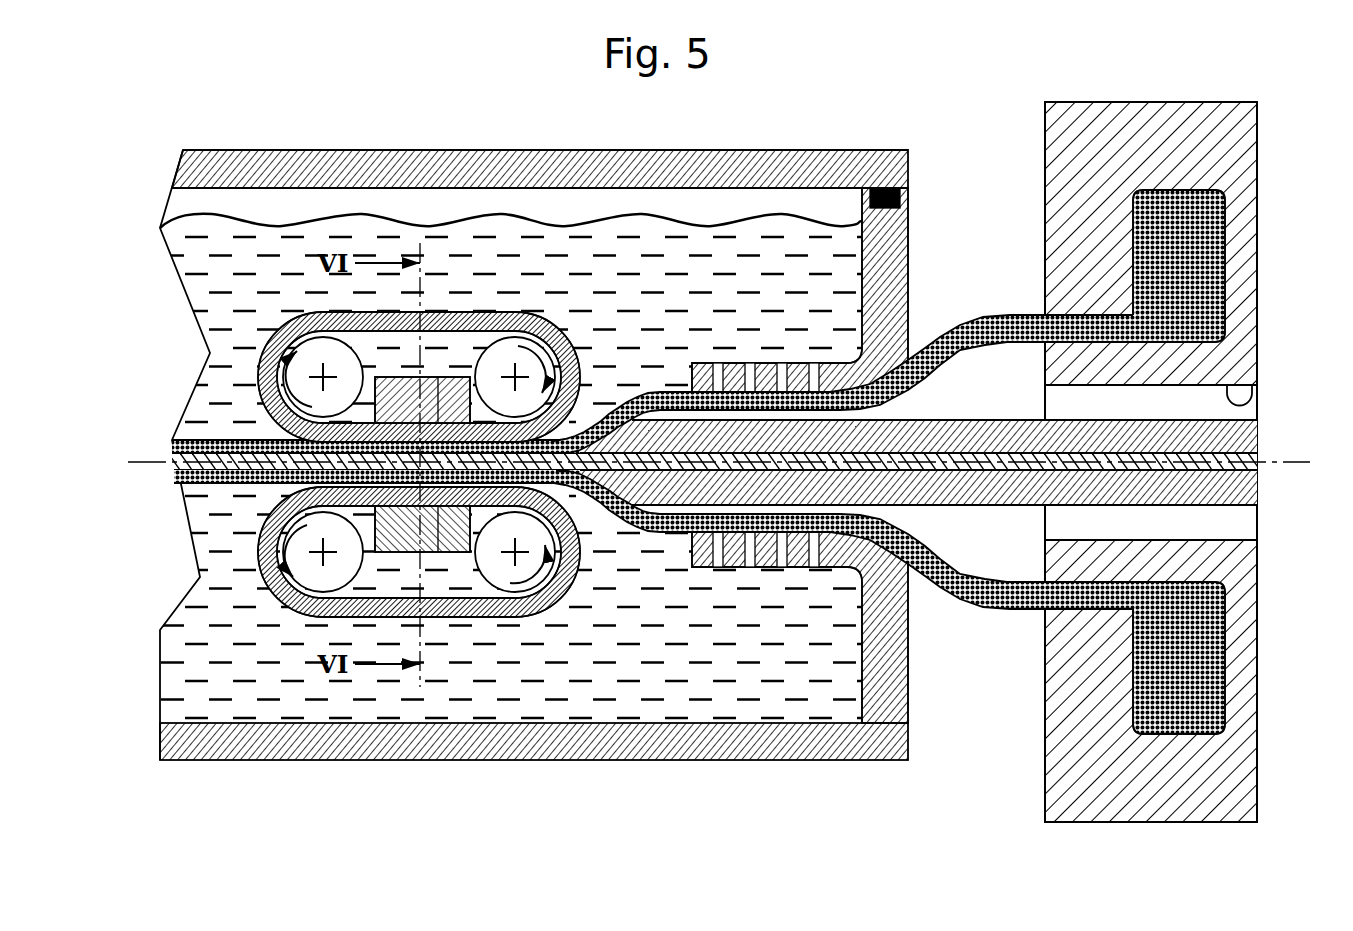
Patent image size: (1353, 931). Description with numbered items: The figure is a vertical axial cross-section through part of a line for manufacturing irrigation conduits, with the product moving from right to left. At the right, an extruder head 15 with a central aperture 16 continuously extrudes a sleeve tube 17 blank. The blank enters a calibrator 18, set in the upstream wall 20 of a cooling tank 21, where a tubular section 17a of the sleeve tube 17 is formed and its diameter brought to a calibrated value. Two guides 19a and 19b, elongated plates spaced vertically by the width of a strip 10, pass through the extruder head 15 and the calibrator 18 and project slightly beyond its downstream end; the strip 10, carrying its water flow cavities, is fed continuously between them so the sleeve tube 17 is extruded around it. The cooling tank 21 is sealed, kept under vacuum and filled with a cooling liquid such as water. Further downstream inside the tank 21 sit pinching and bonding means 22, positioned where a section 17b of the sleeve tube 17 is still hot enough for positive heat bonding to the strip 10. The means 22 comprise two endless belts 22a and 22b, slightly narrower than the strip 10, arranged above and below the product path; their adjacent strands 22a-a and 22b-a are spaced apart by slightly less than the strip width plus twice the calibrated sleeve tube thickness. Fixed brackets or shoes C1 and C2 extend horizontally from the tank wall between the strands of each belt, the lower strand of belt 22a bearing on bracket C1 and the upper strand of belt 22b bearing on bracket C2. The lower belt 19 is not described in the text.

The strip 10 is at (980, 432).
The extruder head 15 is at (1240, 152).
The central aperture 16 is at (1254, 394).
The sleeve tube 17 is at (972, 333).
The tubular section 17a is at (737, 398).
The section of sleeve tube 17b is at (618, 410).
The calibrator 18 is at (703, 568).
The lower conveyor belt 19 is at (889, 602).
The guide 19a is at (670, 440).
The guide 19b is at (663, 514).
The upstream wall 20 is at (890, 676).
The cooling tank 21 is at (638, 747).
The pinching and bonding means 22 is at (458, 345).
The endless belt 22a is at (545, 318).
The adjacent strand 22a-a is at (445, 380).
The endless belt 22b is at (545, 610).
The adjacent strand 22b-a is at (445, 548).
The bracket C1 is at (420, 345).
The bracket C2 is at (420, 583).